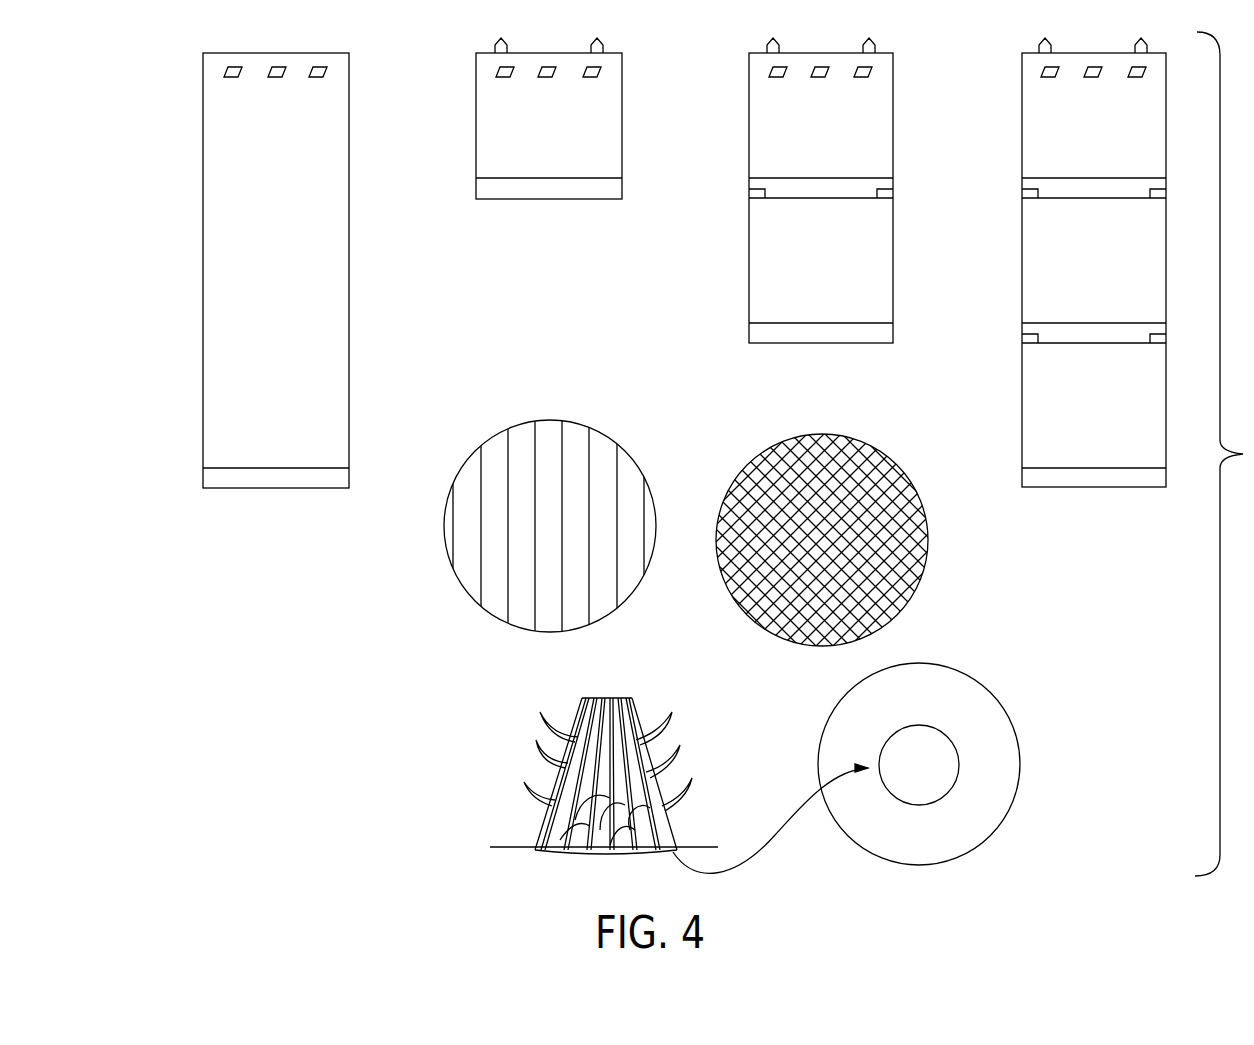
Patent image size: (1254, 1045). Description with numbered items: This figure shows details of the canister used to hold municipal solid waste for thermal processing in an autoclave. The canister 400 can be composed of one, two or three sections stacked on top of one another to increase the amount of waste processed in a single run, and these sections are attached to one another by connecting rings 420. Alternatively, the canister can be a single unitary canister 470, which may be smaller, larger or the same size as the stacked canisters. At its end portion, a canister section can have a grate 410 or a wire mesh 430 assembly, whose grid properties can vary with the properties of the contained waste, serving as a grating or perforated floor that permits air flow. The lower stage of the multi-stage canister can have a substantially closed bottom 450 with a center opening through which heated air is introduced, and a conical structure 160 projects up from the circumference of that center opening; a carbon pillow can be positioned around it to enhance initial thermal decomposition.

The single unitary canister 470 is at (165, 135).
The grate 410 is at (472, 177).
The canister 400 is at (745, 177).
The connecting ring 420 is at (1022, 193).
The wire mesh 430 is at (775, 427).
The substantially closed bottom 450 is at (973, 655).
The conical structure 160 is at (525, 833).